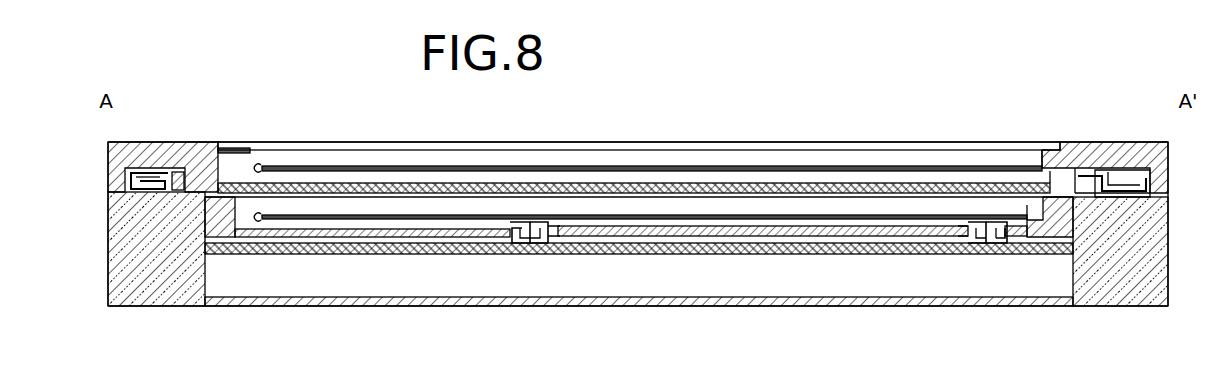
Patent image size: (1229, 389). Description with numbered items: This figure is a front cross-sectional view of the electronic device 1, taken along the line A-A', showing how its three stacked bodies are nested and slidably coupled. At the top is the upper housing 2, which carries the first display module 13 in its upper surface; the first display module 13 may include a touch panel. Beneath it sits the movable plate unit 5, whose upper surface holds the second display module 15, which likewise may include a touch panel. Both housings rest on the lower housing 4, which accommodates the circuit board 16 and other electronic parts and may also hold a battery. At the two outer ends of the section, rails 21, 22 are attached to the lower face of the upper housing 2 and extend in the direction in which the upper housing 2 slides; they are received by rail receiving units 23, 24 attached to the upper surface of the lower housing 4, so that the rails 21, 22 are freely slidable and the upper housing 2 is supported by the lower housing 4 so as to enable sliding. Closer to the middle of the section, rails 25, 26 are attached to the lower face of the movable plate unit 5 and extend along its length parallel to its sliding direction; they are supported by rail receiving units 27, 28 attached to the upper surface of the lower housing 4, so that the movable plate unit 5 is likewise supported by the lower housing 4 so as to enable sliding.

The electronic device 1 is at (652, 100).
The upper housing 2 is at (1168, 156).
The lower housing 4 is at (1168, 266).
The movable plate unit 5 is at (208, 228).
The first display module 13 is at (306, 142).
The second display module 15 is at (878, 196).
The circuit board 16 is at (785, 254).
The rail 21 is at (177, 171).
The rail 22 is at (1103, 169).
The rail receiving unit 23 is at (140, 198).
The rail receiving unit 24 is at (1140, 197).
The rail 25 is at (538, 248).
The rail 26 is at (988, 250).
The rail receiving unit 27 is at (567, 248).
The rail receiving unit 28 is at (970, 250).